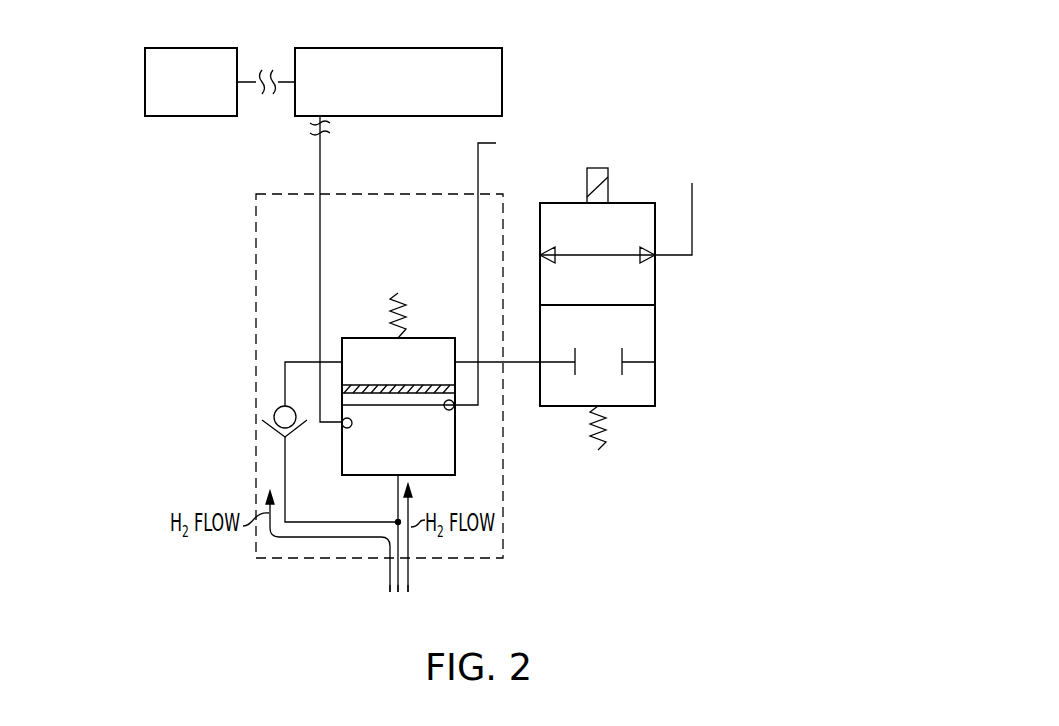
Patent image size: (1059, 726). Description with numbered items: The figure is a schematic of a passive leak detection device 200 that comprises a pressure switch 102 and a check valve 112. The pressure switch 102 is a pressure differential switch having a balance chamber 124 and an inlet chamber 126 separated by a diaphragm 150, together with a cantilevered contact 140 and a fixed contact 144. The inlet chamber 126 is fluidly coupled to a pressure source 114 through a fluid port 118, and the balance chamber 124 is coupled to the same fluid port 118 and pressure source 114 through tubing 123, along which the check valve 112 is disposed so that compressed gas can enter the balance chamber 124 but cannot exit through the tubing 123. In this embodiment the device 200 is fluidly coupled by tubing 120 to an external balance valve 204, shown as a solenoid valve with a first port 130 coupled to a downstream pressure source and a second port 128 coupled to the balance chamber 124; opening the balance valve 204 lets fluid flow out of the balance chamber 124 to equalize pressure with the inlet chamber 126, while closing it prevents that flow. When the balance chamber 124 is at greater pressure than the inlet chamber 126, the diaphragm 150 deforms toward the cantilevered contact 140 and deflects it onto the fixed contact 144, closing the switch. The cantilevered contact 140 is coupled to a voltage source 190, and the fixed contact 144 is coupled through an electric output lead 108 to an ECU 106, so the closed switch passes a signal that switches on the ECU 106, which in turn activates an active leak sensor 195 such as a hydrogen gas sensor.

The active leak sensor 195 is at (145, 82).
The electronic control unit (ECU) 106 is at (502, 82).
The electric output lead 108 is at (322, 155).
The passive leak detection device 200 is at (229, 201).
The voltage source 190 is at (560, 131).
The external balance valve 204 is at (655, 331).
The first port 130 is at (617, 238).
The second port 128 is at (617, 341).
The tubing 120 is at (523, 364).
The pressure switch 102 is at (369, 338).
The balance chamber 124 is at (417, 372).
The inlet chamber 126 is at (417, 452).
The diaphragm 150 is at (427, 385).
The fixed contact 144 is at (344, 428).
The cantilevered contact 140 is at (453, 410).
The check valve 112 is at (274, 410).
The tubing 123 is at (283, 470).
The fluid port 118 is at (396, 502).
The pressure source 114 is at (327, 609).